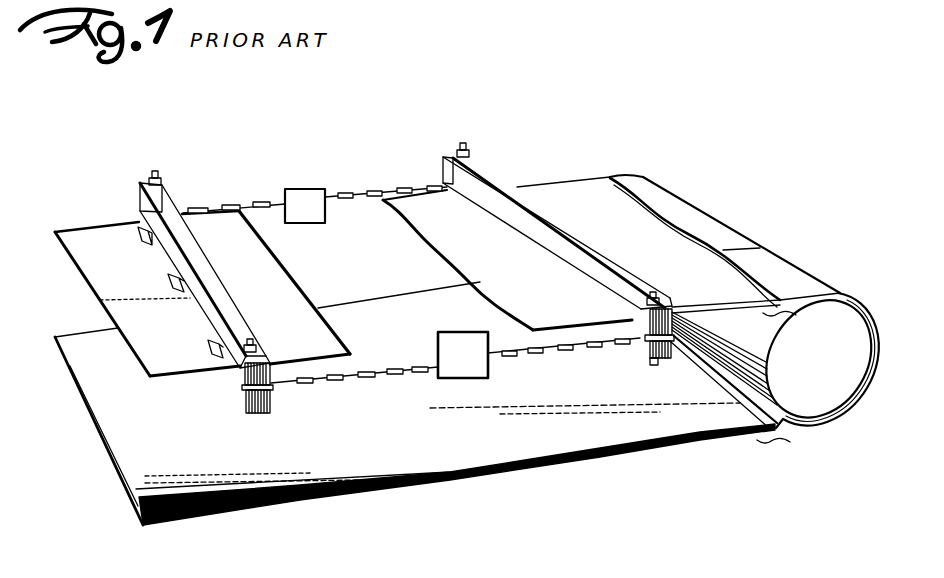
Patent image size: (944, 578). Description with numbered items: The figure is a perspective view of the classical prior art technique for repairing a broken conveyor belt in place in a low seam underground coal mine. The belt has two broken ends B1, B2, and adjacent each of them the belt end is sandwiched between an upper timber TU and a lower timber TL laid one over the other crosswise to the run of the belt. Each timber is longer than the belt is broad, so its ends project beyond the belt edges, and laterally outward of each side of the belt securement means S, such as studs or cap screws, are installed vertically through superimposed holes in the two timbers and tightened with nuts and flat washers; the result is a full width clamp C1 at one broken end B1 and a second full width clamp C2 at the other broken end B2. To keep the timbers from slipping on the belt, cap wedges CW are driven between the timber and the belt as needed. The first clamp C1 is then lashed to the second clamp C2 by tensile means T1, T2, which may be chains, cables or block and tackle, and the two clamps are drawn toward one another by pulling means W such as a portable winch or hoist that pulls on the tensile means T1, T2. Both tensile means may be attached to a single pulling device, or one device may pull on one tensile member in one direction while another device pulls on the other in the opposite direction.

The securement means S is at (163, 183).
The upper timber TU is at (222, 293).
The lower timber TL is at (242, 388).
The cap wedges CW is at (208, 350).
The clamp C1 is at (195, 320).
The clamp C2 is at (643, 273).
The broken end of the belt B1 is at (279, 272).
The broken end of the belt B2 is at (412, 234).
The tensile means T1 is at (258, 203).
The tensile means T2 is at (374, 192).
The pulling means W is at (386, 283).